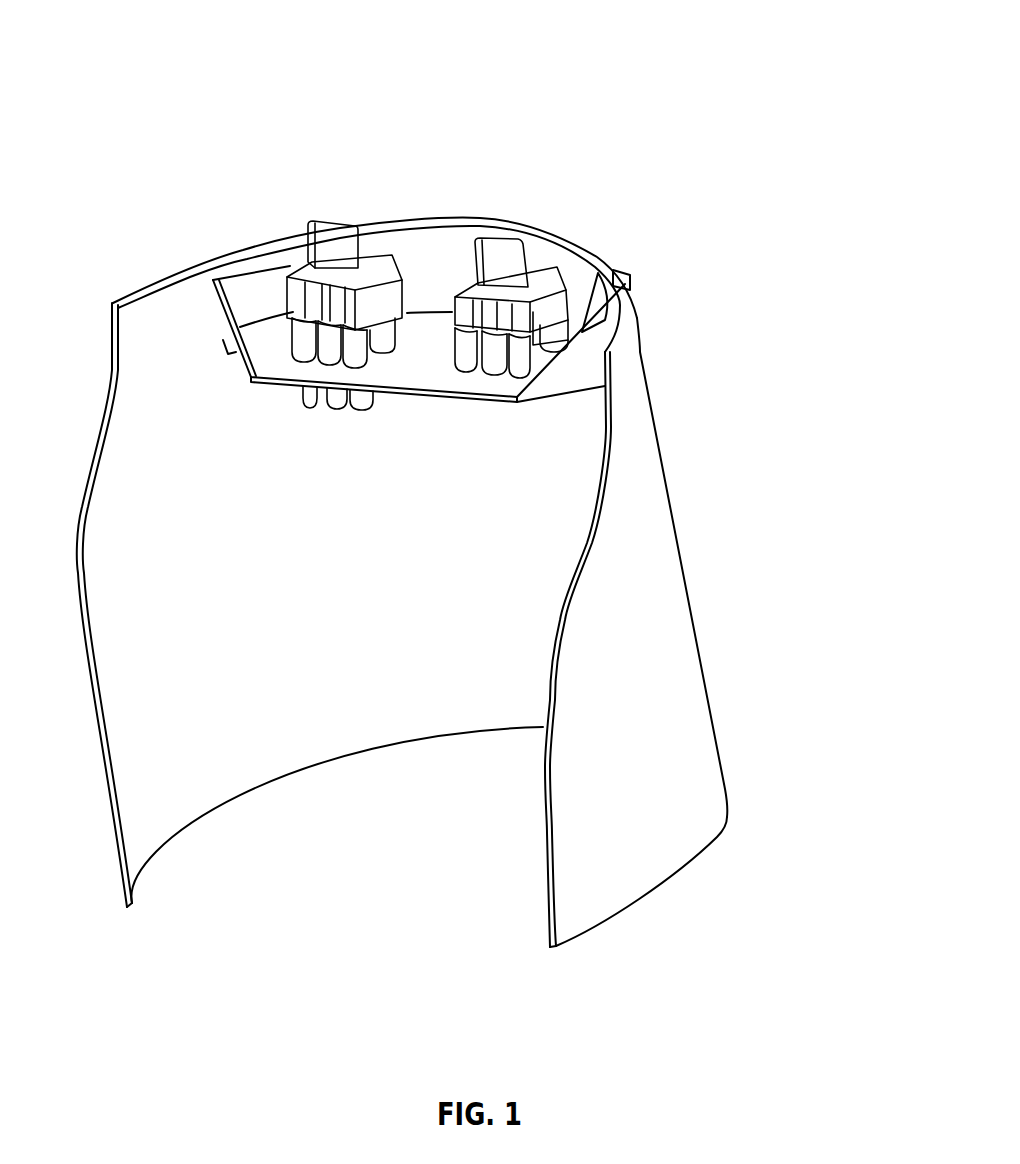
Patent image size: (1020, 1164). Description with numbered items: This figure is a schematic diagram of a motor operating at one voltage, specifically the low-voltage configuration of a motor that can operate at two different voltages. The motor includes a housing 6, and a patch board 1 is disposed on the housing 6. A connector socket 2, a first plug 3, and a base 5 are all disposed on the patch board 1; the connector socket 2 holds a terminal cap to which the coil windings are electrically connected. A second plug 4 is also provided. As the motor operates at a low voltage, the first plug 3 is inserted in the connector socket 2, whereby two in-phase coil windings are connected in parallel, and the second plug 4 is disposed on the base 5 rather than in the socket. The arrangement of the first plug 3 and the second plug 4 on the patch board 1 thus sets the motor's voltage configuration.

The mounting plate 1 is at (416, 383).
The battery cells 2 is at (347, 369).
The left post 3 is at (355, 214).
The right post 4 is at (527, 237).
The battery holder 5 is at (559, 333).
The housing shell 6 is at (649, 670).